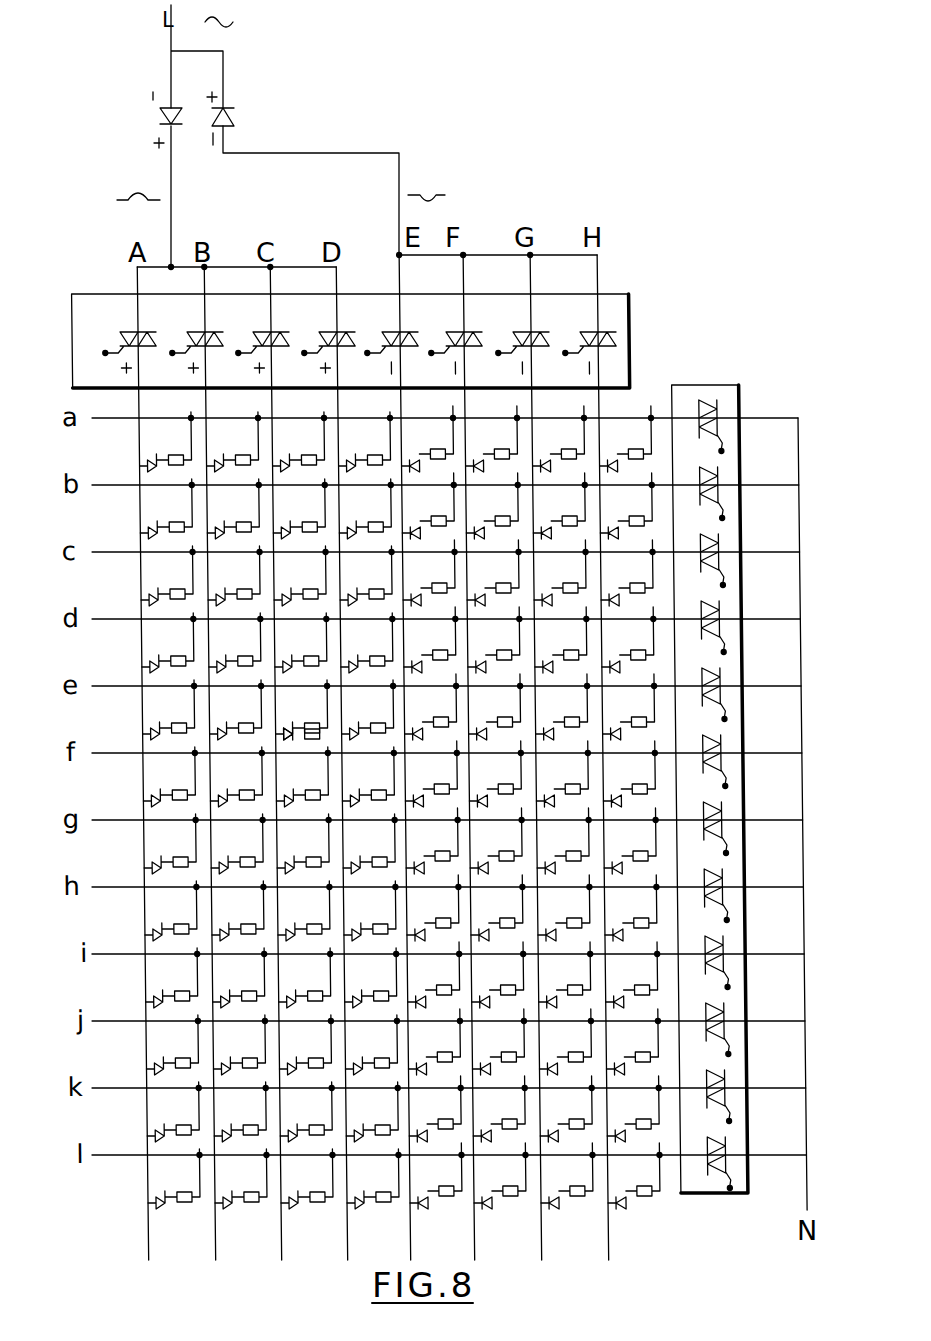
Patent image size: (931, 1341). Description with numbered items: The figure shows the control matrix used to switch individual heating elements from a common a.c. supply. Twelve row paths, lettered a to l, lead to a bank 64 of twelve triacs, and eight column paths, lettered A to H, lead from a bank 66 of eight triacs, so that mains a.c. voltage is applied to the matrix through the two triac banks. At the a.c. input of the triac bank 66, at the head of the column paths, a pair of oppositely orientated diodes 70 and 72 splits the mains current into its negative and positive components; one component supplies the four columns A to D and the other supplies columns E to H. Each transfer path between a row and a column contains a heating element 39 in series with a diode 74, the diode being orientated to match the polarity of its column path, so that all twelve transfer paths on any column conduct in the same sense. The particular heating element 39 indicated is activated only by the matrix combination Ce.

The diode 70 is at (155, 100).
The diode 72 is at (235, 100).
The bank of eight triacs 66 is at (633, 316).
The bank of twelve triacs 64 is at (708, 383).
The heating element 39 is at (309, 729).
The diode 74 is at (288, 738).